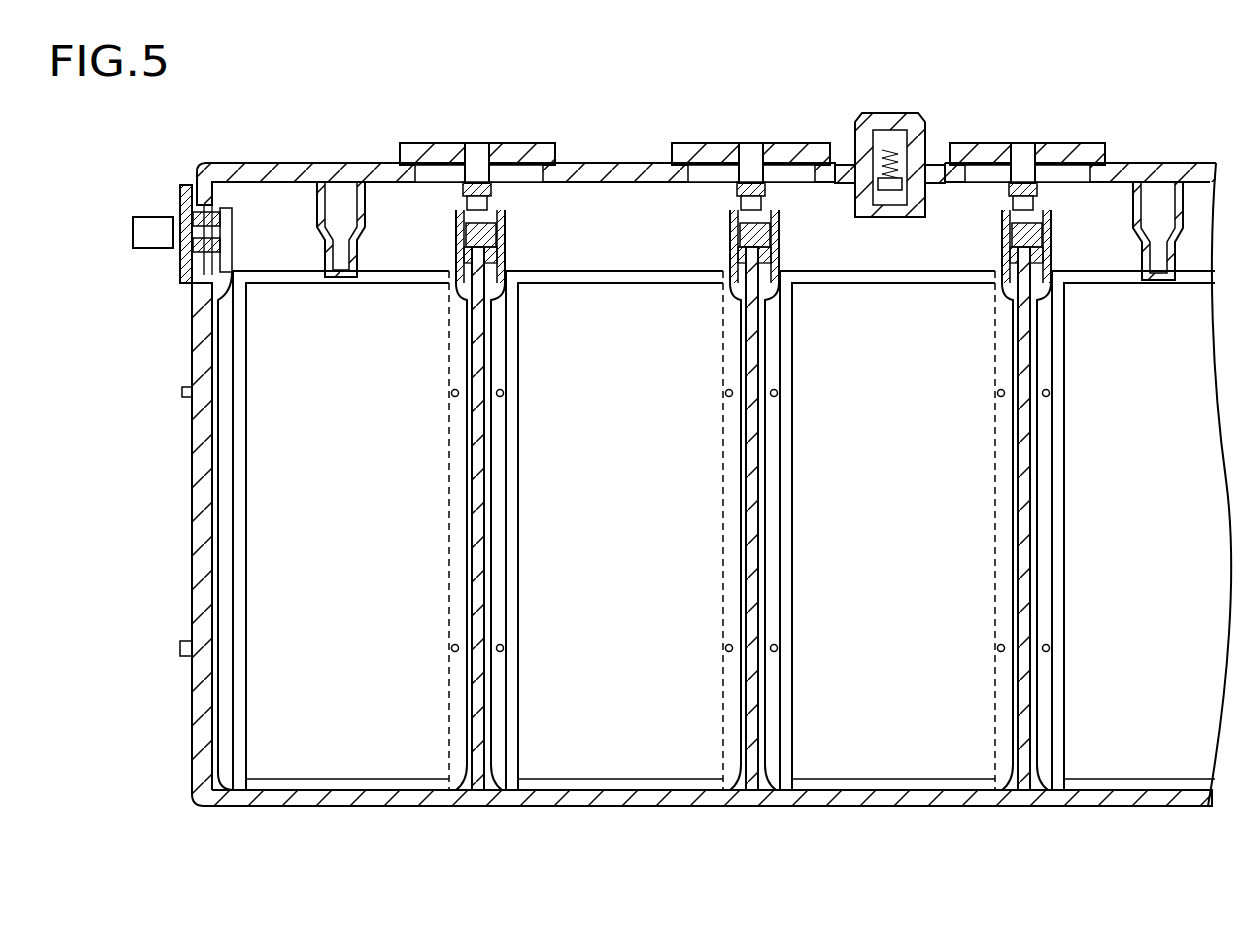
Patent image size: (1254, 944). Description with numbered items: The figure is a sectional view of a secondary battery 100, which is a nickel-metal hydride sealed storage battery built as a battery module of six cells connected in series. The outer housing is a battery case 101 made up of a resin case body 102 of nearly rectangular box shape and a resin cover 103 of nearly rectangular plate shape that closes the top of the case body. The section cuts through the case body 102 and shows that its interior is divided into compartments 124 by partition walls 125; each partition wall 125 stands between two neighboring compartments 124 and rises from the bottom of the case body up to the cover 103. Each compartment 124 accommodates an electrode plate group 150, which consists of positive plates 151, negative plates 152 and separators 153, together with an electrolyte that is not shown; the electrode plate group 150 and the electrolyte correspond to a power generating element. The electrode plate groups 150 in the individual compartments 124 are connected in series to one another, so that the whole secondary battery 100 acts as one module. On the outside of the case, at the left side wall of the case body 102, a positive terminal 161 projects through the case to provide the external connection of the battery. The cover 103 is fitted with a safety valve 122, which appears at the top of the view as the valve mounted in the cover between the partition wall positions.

The secondary battery 100 is at (588, 118).
The battery case 101 is at (181, 438).
The case body 102 is at (200, 597).
The cover 103 is at (277, 165).
The safety valve 122 is at (852, 142).
The compartment 124 is at (288, 790).
The partition wall 125 is at (473, 710).
The electrode plate group 150 is at (360, 725).
The positive plate 151 is at (341, 530).
The negative plate 152 is at (614, 530).
The separator 153 is at (887, 530).
The positive terminal 161 is at (156, 228).